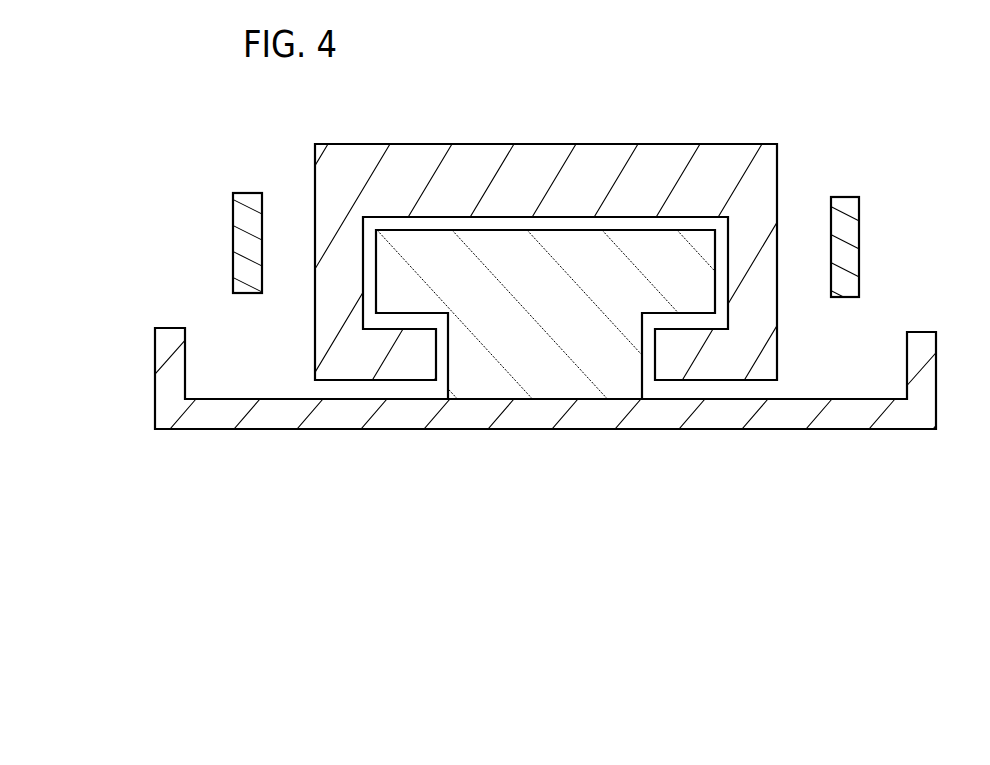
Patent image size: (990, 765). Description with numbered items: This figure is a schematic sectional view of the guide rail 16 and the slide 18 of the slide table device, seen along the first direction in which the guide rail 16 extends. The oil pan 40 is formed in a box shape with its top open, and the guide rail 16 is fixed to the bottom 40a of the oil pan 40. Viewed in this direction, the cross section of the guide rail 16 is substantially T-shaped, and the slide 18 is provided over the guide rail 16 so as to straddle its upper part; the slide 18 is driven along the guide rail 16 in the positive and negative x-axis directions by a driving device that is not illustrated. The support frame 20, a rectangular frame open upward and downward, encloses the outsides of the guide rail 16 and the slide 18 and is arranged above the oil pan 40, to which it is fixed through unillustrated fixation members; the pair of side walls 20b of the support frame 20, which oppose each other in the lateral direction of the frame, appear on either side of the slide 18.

The guide rail 16 is at (545, 376).
The slide 18 is at (537, 145).
The support frame 20 is at (553, 225).
The side walls 20b is at (247, 240).
The oil pan 40 is at (149, 349).
The bottom of the oil pan 40a is at (243, 399).